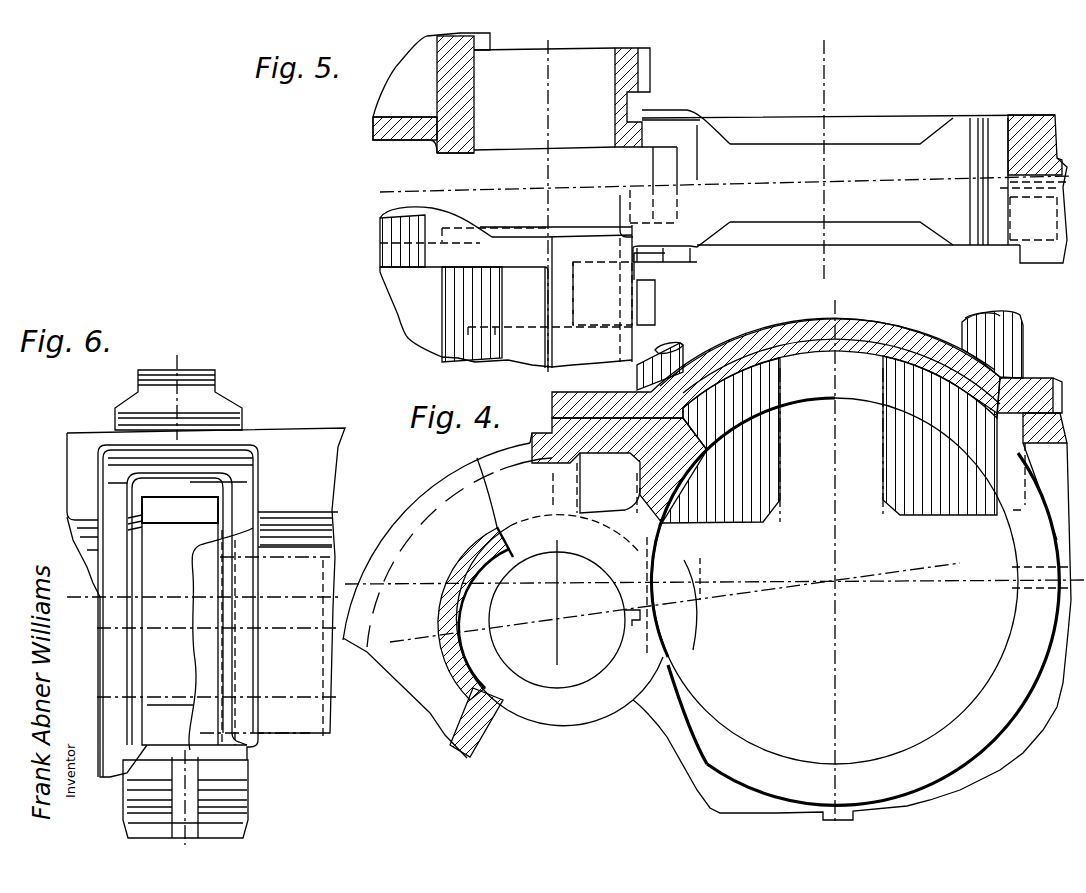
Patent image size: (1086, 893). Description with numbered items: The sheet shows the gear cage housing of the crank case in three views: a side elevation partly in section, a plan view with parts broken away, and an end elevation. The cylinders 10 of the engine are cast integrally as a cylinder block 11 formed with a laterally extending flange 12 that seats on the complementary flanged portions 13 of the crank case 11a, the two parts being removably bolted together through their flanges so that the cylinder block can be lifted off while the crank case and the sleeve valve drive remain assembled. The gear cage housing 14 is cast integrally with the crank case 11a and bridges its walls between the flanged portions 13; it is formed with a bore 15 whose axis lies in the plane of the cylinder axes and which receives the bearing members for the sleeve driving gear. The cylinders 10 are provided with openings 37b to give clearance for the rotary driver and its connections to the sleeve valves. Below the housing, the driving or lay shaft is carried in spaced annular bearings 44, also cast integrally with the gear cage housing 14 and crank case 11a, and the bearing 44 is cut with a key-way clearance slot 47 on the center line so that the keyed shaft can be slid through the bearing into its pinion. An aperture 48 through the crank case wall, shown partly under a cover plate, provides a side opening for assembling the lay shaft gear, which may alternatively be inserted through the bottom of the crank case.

In FIG. 4, the cylinders 10 is at (1000, 340).
In FIG. 4, the cylinder block 11 is at (1027, 353).
In FIG. 4, the crank case 11a is at (1047, 385).
In FIG. 6, the crank case 11a is at (333, 457).
In FIG. 4, the laterally extending flange 12 is at (567, 393).
In FIG. 4, the flanged portions 13 is at (1018, 447).
In FIG. 4, the gear cage housing 14 is at (1025, 522).
In FIG. 6, the gear cage housing 14 is at (200, 387).
In FIG. 5, the bore 15 is at (1000, 125).
In FIG. 4, the bore 15 is at (942, 728).
In FIG. 4, the openings 37b is at (803, 460).
In FIG. 5, the bearings 44 is at (598, 85).
In FIG. 4, the bearings 44 is at (533, 690).
In FIG. 5, the clearance slot 47 is at (624, 322).
In FIG. 4, the clearance slot 47 is at (627, 614).
In FIG. 4, the aperture 48 is at (504, 455).
In FIG. 6, the aperture 48 is at (137, 483).